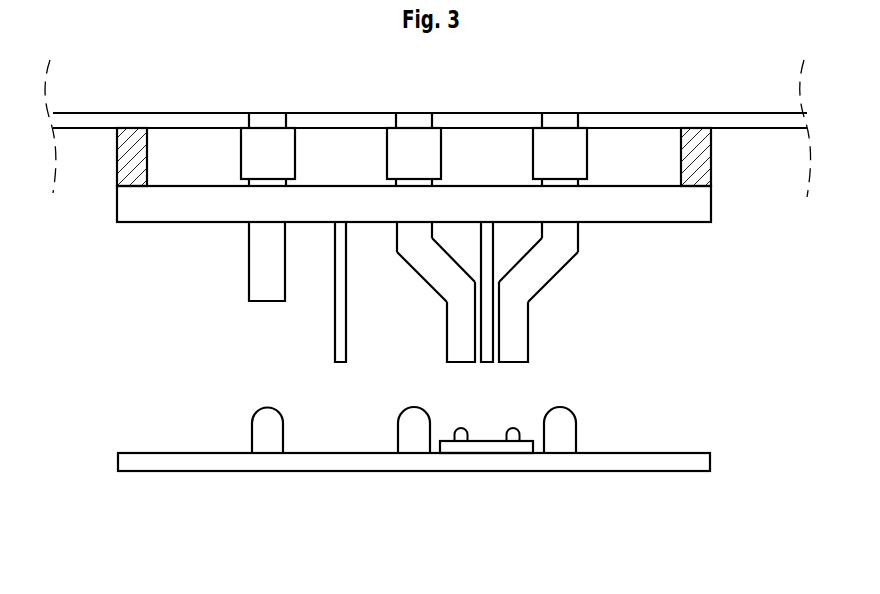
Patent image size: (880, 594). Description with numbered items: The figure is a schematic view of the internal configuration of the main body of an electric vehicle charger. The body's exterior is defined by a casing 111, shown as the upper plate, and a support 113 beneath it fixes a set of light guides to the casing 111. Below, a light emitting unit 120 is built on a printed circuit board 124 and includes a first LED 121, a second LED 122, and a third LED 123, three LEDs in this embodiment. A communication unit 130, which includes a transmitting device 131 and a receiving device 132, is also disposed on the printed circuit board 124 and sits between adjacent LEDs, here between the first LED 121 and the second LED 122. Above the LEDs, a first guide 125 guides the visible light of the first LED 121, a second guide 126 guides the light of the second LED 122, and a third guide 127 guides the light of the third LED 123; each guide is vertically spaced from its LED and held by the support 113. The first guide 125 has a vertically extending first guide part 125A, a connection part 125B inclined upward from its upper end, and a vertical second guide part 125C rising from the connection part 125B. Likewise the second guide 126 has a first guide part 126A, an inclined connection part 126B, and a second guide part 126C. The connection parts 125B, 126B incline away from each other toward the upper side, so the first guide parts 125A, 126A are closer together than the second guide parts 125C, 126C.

The casing 111 is at (707, 120).
The support 113 is at (700, 199).
The light emitting unit 120 is at (414, 481).
The first LED 121 is at (578, 404).
The second LED 122 is at (398, 433).
The third LED 123 is at (270, 445).
The printed circuit board 124 is at (632, 463).
The first guide 125 is at (562, 150).
The first guide part 125A is at (518, 335).
The connection part 125B is at (553, 272).
The second guide part 125C is at (568, 233).
The second guide 126 is at (418, 150).
The first guide part 126A is at (460, 338).
The connection part 126B is at (432, 276).
The second guide part 126C is at (407, 238).
The third guide 127 is at (265, 150).
The communication unit 130 is at (488, 490).
The transmitting device 131 is at (515, 437).
The receiving device 132 is at (460, 437).